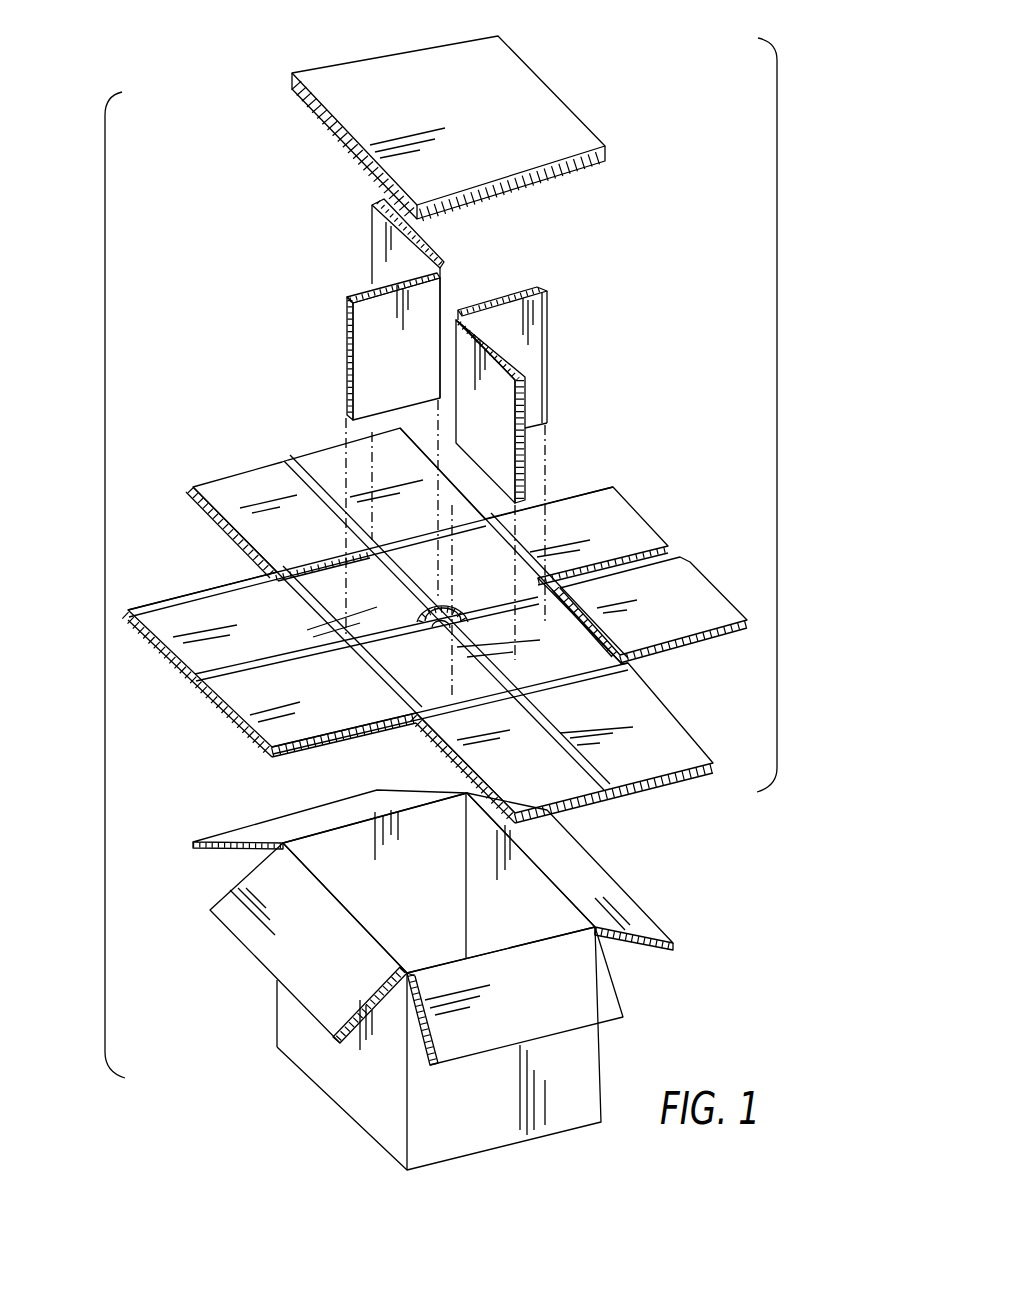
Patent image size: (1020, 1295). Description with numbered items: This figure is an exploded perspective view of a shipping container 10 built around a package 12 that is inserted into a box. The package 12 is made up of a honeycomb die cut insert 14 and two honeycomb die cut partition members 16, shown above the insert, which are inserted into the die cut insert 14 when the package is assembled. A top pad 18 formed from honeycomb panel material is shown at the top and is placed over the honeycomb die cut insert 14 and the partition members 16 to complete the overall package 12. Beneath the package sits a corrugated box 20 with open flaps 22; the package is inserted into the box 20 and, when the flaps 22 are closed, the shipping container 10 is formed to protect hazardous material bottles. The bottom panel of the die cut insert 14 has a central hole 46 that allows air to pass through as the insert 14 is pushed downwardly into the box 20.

The shipping container 10 is at (101, 601).
The package 12 is at (786, 499).
The honeycomb die cut insert 14 is at (258, 456).
The honeycomb die cut partition members 16 is at (368, 341).
The top pad 18 is at (536, 100).
The corrugated box 20 is at (735, 970).
The flaps 22 is at (586, 866).
The central hole 46 is at (442, 624).